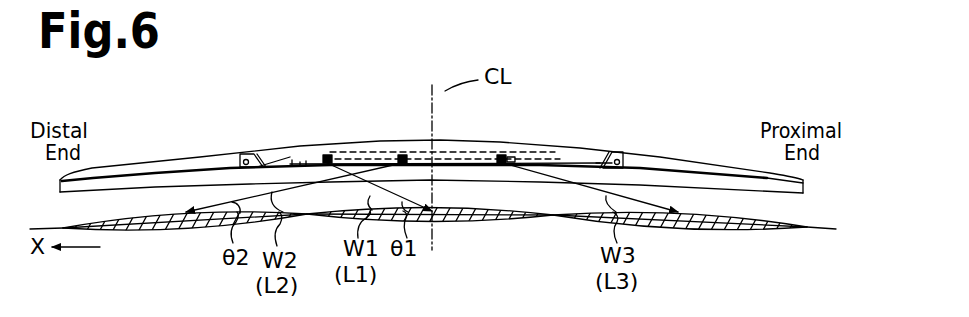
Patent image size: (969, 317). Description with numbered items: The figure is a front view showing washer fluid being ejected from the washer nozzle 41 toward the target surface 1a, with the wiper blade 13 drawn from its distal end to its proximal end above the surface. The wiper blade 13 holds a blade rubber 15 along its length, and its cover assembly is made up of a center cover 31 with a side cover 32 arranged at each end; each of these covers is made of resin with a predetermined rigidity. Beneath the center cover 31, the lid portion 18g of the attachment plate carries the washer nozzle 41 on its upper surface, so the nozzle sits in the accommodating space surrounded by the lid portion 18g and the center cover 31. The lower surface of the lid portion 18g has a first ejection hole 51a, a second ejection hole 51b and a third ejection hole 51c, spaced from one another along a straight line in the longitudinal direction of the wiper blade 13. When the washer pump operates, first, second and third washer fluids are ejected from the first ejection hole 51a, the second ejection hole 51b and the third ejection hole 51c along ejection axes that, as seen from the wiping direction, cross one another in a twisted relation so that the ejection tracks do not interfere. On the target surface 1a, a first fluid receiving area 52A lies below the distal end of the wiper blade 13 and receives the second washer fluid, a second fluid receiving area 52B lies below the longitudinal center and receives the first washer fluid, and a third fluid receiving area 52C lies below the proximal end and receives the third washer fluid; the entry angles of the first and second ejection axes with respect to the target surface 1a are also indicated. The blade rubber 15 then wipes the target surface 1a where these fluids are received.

The wiper blade 13 is at (197, 93).
The blade rubber 15 is at (147, 194).
The side cover 32 is at (185, 156).
The center cover 31 is at (606, 150).
The lid portion 18g is at (284, 155).
The washer nozzle 41 is at (456, 145).
The first ejection hole 51a is at (327, 153).
The second ejection hole 51b is at (402, 153).
The third ejection hole 51c is at (503, 153).
The first fluid receiving area 52A is at (184, 229).
The second fluid receiving area 52B is at (489, 222).
The third fluid receiving area 52C is at (680, 228).
The target surface 1a is at (821, 224).